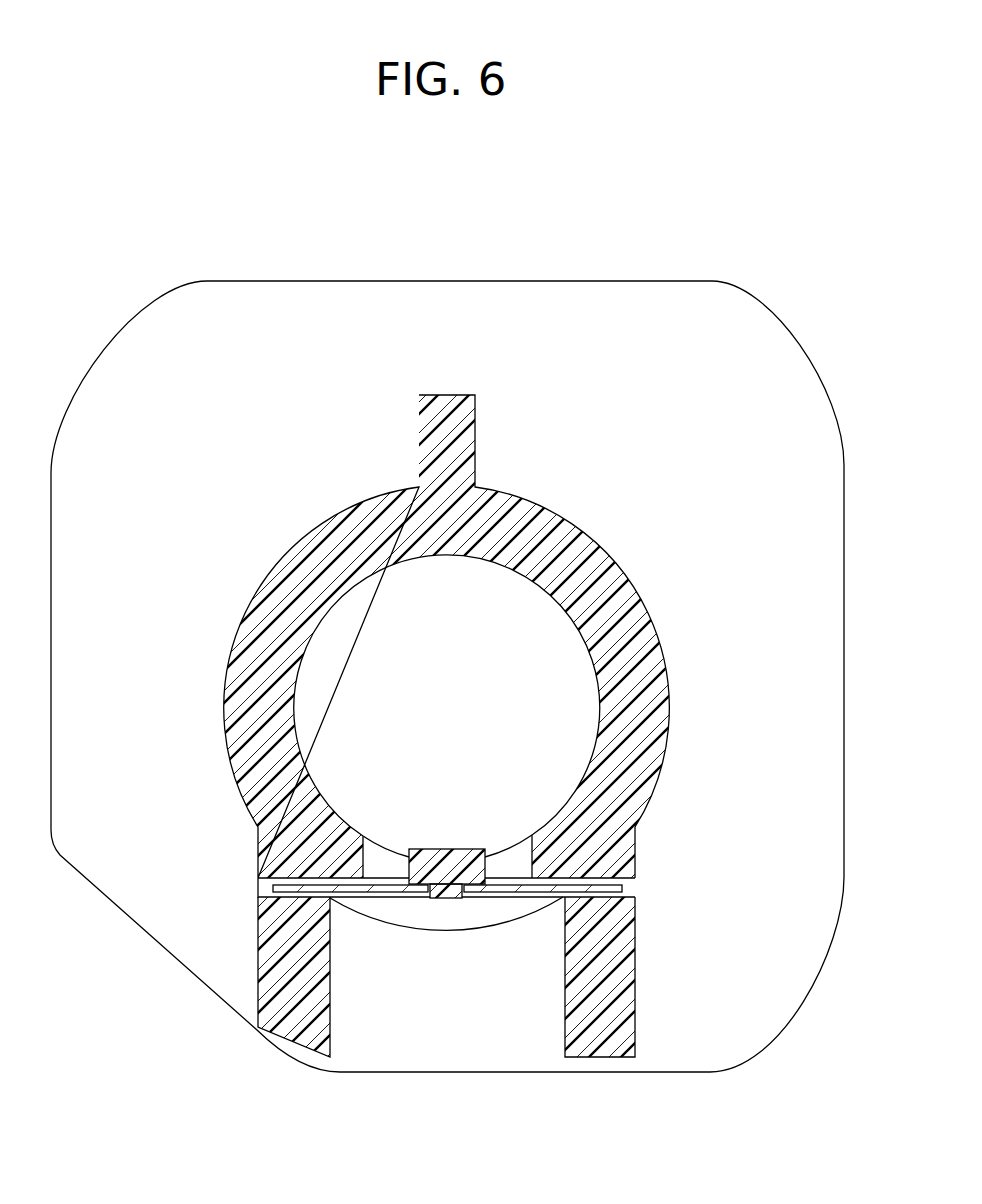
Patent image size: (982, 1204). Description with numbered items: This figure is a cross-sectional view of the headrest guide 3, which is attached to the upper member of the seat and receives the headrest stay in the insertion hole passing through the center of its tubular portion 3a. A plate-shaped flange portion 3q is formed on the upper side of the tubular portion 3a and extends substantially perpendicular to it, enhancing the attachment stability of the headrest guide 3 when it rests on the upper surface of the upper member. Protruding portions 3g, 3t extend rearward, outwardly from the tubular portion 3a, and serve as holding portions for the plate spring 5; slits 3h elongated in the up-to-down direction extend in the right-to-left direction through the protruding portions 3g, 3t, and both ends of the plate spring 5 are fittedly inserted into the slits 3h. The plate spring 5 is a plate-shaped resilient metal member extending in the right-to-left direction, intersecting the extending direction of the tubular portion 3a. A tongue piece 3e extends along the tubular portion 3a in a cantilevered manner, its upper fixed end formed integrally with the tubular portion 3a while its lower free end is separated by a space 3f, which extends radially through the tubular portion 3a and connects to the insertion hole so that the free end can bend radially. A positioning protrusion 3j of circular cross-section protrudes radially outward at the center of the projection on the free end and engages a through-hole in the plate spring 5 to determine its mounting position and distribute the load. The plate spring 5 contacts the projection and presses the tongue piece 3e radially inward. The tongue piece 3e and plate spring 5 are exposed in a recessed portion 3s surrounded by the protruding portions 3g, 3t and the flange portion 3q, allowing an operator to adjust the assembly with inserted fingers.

The headrest guide 3 is at (163, 215).
The flange portion 3q is at (736, 338).
The tubular portion 3a is at (589, 547).
The tongue piece 3e is at (455, 857).
The slits 3h is at (262, 887).
The protruding portion 3t is at (270, 937).
The protruding portion 3g is at (627, 945).
The plate spring 5 is at (390, 898).
The positioning protrusion 3j is at (452, 900).
The space 3f is at (510, 903).
The recessed portion 3s is at (420, 1025).